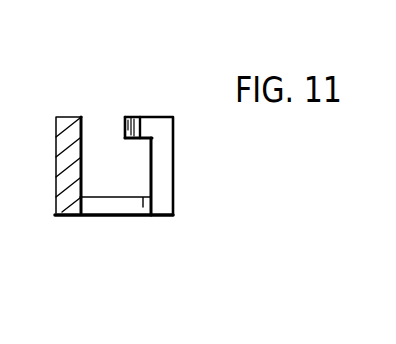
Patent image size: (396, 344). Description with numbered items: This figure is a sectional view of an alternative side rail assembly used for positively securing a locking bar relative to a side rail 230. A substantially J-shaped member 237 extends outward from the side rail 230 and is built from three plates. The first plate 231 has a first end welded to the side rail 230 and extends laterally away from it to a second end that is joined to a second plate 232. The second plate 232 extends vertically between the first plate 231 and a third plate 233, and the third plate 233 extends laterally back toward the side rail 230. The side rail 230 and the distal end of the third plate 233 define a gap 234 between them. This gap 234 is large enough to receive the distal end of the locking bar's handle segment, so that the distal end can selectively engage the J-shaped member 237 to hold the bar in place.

The side rail 230 is at (55, 217).
The first plate 231 is at (127, 217).
The second plate 232 is at (174, 198).
The third plate 233 is at (144, 117).
The gap 234 is at (97, 125).
The J-shaped member 237 is at (174, 160).